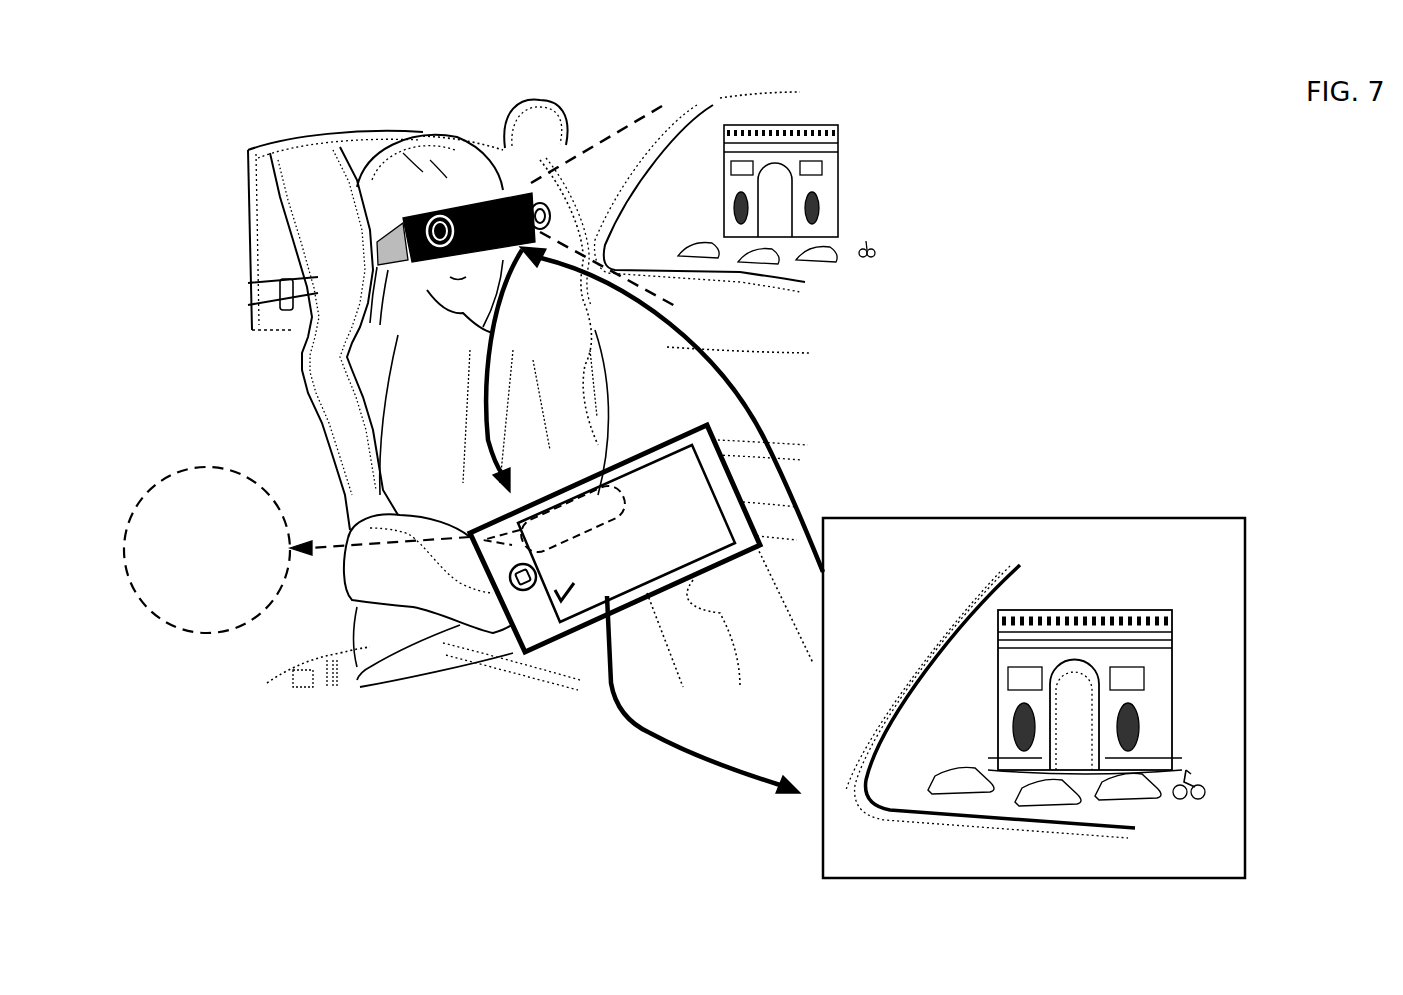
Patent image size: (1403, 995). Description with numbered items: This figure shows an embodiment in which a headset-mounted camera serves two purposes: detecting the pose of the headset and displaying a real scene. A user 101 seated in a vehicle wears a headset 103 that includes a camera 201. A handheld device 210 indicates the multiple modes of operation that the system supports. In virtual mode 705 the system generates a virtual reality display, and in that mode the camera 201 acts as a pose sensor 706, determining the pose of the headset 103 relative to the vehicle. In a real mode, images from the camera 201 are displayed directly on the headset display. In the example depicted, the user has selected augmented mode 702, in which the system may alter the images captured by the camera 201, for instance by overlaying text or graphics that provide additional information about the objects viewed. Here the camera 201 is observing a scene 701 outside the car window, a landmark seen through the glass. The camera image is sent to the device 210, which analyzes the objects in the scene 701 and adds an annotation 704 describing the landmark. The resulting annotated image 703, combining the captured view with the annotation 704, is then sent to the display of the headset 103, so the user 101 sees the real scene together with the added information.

The user 101 is at (403, 422).
The headset 103 is at (507, 193).
The camera 201 is at (531, 183).
The device 210 is at (527, 643).
The scene 701 is at (837, 180).
The augmented mode 702 is at (585, 600).
The annotated image 703 is at (1023, 878).
The annotation 704 is at (948, 540).
The virtual mode 705 is at (620, 503).
The pose sensor 706 is at (232, 640).